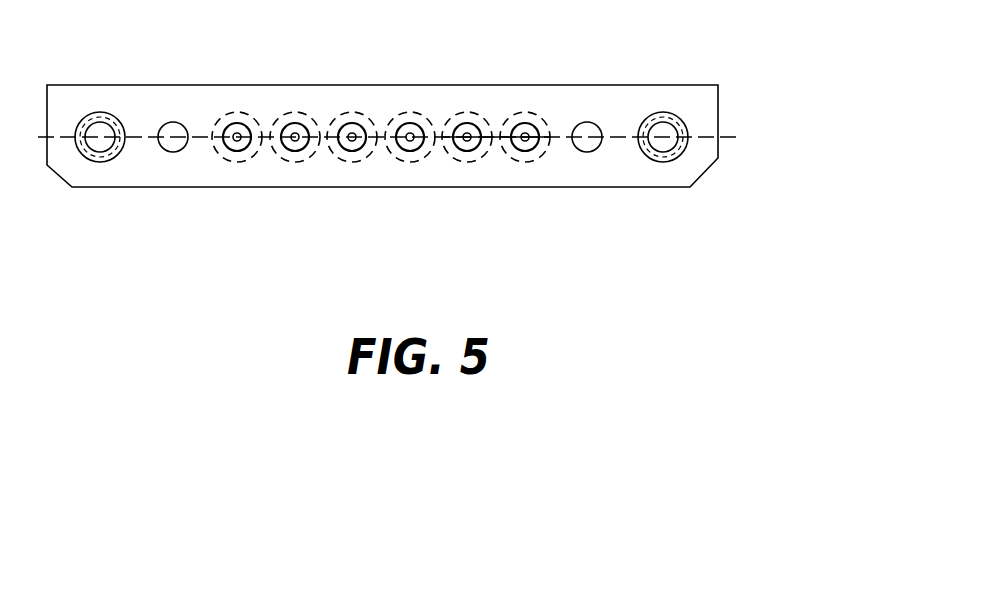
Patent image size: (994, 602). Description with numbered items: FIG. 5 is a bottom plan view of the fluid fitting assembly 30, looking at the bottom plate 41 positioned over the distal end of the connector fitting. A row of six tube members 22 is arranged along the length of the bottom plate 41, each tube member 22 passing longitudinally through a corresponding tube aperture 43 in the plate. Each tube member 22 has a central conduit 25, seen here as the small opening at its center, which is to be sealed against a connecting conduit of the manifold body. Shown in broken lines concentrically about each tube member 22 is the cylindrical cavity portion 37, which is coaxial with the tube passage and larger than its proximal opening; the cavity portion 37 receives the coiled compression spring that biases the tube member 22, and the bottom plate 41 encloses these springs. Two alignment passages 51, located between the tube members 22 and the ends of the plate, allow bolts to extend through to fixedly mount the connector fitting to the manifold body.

The fluid fitting assembly 30 is at (774, 42).
The bottom plate 41 is at (718, 108).
The alignment passages 51 is at (173, 152).
The cylindrical cavity portion 37 is at (250, 112).
The tube aperture 43 is at (358, 123).
The tube member 22 is at (475, 113).
The central conduit 25 is at (470, 135).